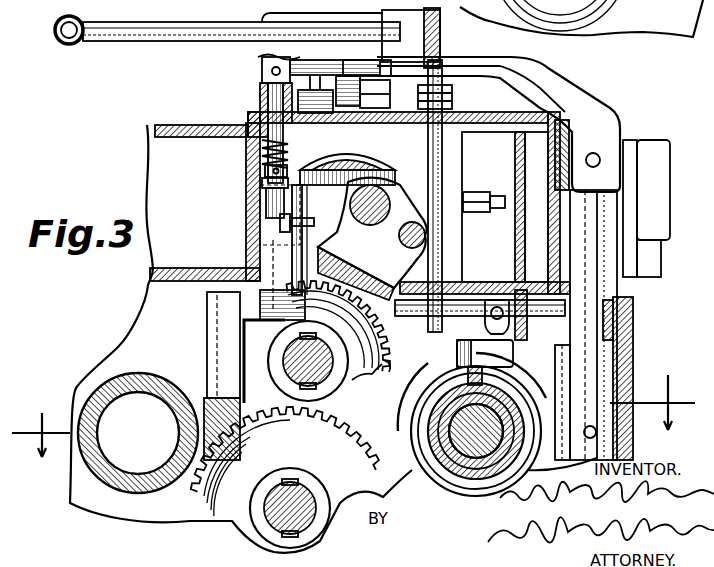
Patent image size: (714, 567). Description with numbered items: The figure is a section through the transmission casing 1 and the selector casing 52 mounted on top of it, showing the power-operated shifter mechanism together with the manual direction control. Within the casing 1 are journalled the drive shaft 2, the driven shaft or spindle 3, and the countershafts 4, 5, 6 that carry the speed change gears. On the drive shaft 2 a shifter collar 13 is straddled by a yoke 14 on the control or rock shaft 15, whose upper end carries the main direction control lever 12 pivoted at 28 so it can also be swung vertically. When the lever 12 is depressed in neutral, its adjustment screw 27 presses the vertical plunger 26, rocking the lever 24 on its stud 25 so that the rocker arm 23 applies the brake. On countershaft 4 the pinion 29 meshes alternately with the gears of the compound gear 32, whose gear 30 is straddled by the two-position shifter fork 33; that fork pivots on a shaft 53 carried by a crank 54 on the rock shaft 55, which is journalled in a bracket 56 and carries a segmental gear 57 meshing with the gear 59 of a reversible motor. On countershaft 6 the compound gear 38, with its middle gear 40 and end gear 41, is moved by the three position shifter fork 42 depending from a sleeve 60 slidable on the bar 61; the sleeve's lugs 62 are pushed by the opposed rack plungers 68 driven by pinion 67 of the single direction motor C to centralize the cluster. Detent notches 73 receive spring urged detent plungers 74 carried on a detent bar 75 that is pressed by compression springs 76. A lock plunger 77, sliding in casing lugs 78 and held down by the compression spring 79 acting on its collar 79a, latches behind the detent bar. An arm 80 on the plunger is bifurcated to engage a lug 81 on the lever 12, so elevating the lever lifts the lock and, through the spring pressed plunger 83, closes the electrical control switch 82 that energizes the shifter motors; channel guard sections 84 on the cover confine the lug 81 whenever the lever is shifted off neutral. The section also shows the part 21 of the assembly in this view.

The main direction control lever 12 is at (190, 23).
The spring pressed plunger 83 is at (330, 93).
The electrical control switch 82 is at (356, 78).
The lug 81 is at (372, 82).
The channel guard sections 84 is at (400, 100).
The arm 80 is at (262, 63).
The lugs 78 is at (260, 97).
The selector casing 52 is at (206, 110).
The pinion 29 is at (482, 14).
The adjustment screw 27 is at (462, 95).
The pivot 28 is at (600, 154).
The single direction electric motor C is at (682, 160).
The lugs 62 is at (468, 139).
The vertical plunger 26 is at (468, 155).
The rack plungers 68 is at (468, 171).
The pinion 67 is at (498, 183).
The gear 59 is at (384, 156).
The sleeve 60 is at (420, 162).
The collar 79a is at (262, 157).
The compression spring 79 is at (262, 150).
The lock plunger 77 is at (262, 191).
The compression springs 76 is at (266, 204).
The segmental gear 57 is at (246, 205).
The detent bar 75 is at (300, 219).
The bracket 56 is at (246, 242).
The rock shaft 55 is at (246, 250).
The detent plungers 74 is at (296, 250).
The detent notches 73 is at (330, 236).
The shifter fork 42 is at (372, 239).
The bar 61 is at (400, 231).
The lever 24 is at (480, 298).
The stud 25 is at (505, 296).
The shaft 53 is at (214, 330).
The crank 54 is at (268, 333).
The countershaft 6 is at (320, 343).
The middle gear 40 is at (398, 346).
The gear 41 is at (385, 374).
The compound gear 38 is at (383, 376).
The driven shaft or spindle 3 is at (150, 360).
The countershaft 4 is at (353, 416).
The rocker arm 23 is at (505, 320).
The shifter collar 13 is at (518, 378).
The yoke 14 is at (558, 380).
The control or rock shaft 15 is at (633, 323).
The casing 1 is at (640, 360).
The hub 21 is at (392, 414).
The shifter fork 33 is at (258, 433).
The countershaft 5 is at (300, 482).
The gear 30 is at (191, 523).
The compound gear 32 is at (226, 528).
The power or drive shaft 2 is at (458, 496).